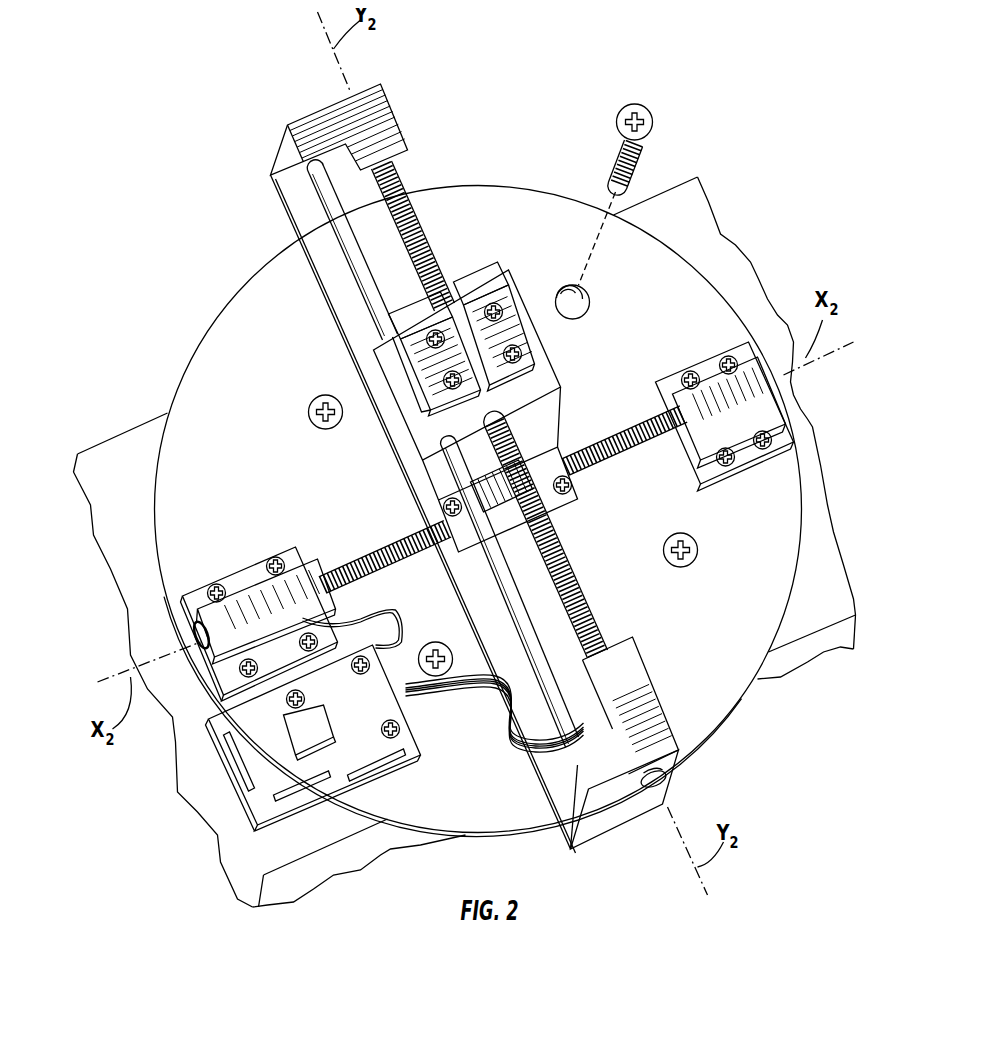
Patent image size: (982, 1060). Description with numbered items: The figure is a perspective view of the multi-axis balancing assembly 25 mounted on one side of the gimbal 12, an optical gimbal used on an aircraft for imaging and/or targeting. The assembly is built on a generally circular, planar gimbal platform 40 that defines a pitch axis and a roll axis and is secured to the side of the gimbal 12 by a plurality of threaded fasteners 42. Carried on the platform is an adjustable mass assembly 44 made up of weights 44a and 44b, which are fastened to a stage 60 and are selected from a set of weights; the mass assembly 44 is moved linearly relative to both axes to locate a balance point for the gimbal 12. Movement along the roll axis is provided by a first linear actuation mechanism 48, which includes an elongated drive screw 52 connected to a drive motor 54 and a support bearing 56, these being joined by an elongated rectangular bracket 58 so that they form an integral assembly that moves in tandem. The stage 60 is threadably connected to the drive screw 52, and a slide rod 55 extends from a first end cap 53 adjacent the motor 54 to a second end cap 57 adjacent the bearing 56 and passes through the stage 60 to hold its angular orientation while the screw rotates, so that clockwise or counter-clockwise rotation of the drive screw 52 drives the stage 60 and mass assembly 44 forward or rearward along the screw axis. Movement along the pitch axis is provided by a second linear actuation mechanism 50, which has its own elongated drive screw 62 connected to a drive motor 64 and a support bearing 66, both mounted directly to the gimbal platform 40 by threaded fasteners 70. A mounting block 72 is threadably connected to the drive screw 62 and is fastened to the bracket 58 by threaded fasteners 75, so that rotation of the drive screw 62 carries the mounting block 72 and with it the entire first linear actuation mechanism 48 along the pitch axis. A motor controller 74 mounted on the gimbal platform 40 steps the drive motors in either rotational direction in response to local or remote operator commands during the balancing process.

The gimbal 12 is at (690, 205).
The multi-axis balancing assembly 25 is at (537, 105).
The gimbal platform 40 is at (728, 697).
The threaded fasteners 42 is at (655, 118).
The adjustable mass assembly 44 is at (476, 357).
The weight 44a is at (410, 397).
The weight 44b is at (507, 297).
The first linear actuation mechanism 48 is at (612, 636).
The second linear actuation mechanism 50 is at (346, 552).
The drive screw 52 is at (580, 577).
The first end cap 53 is at (598, 768).
The drive motor 54 is at (645, 660).
The slide rod 55 is at (320, 183).
The support bearing 56 is at (383, 120).
The second end cap 57 is at (307, 112).
The elongated rectangular bracket 58 is at (343, 300).
The stage 60 is at (378, 360).
The drive screw 62 is at (372, 570).
The drive motor 64 is at (250, 590).
The support bearing 66 is at (765, 393).
The threaded fasteners 70 is at (275, 557).
The mounting block 72 is at (563, 455).
The motor controller 74 is at (262, 812).
The threaded fasteners 75 is at (462, 383).